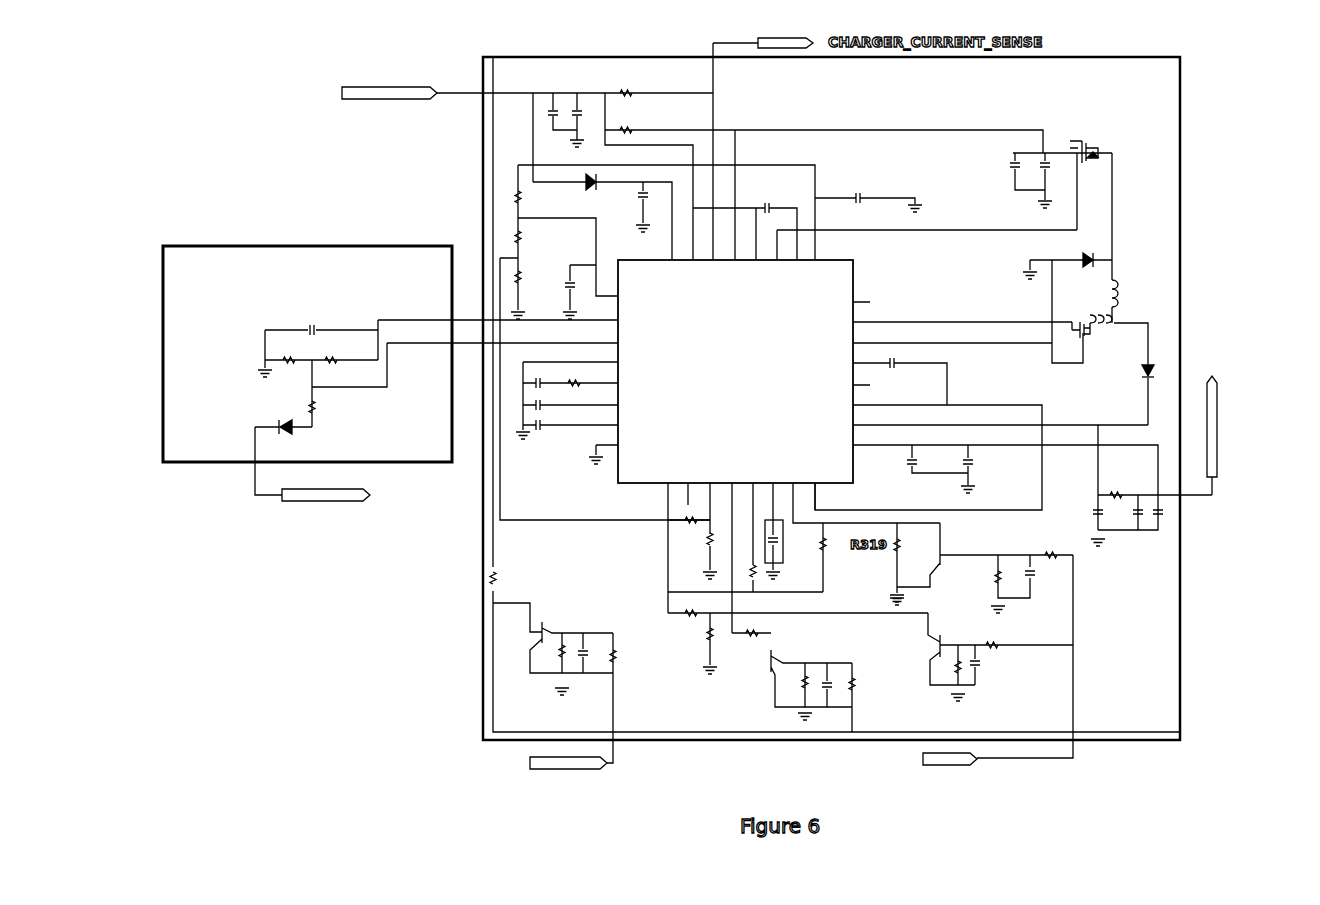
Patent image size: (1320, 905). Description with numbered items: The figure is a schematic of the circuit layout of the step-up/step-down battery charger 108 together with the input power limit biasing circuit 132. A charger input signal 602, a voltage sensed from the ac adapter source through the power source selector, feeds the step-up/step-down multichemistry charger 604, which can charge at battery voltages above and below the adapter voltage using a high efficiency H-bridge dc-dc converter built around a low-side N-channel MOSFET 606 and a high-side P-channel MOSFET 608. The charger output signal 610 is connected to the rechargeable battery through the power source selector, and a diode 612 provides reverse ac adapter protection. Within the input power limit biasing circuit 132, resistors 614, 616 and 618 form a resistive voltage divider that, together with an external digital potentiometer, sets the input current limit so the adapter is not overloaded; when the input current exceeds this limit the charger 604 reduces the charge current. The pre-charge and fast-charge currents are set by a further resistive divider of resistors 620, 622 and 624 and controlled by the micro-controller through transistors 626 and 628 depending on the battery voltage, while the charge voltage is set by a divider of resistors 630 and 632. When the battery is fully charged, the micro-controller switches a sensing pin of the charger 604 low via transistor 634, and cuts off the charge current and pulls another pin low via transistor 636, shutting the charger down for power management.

The step-up/step-down battery charger 108 is at (1182, 592).
The input power limit biasing circuit 132 is at (311, 376).
The charger input signal 602 is at (360, 87).
The step-up/step-down multichemistry charger 604 is at (837, 270).
The low-side N-channel MOSFET 606 is at (1090, 308).
The high-side P-channel MOSFET 608 is at (1087, 143).
The charger output signal 610 is at (1215, 432).
The diode 612 is at (577, 172).
The resistor 614 is at (347, 330).
The resistor 616 is at (282, 348).
The resistor 618 is at (318, 417).
The resistor 620 is at (707, 648).
The resistor 622 is at (673, 618).
The resistor 624 is at (738, 643).
The transistor 626 is at (527, 627).
The transistor 628 is at (772, 683).
The resistor 630 is at (692, 530).
The resistor 632 is at (675, 560).
The transistor 634 is at (940, 658).
The transistor 636 is at (955, 563).